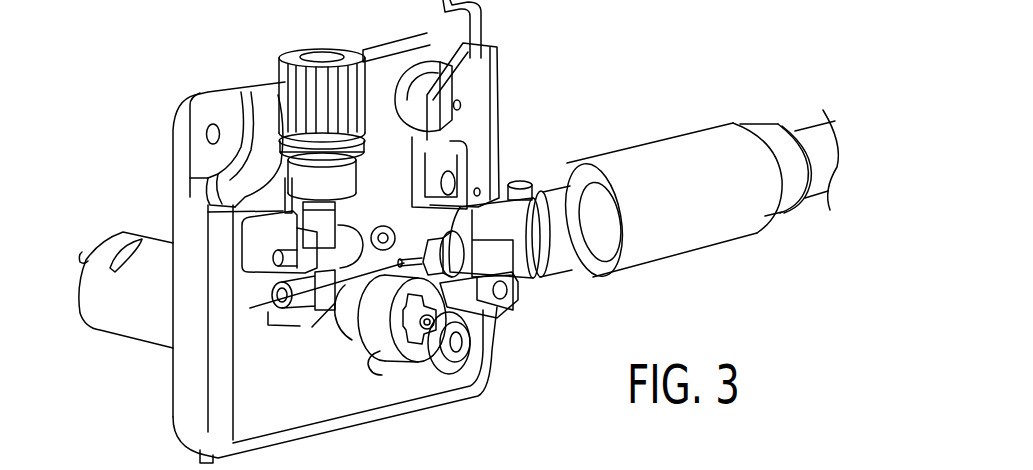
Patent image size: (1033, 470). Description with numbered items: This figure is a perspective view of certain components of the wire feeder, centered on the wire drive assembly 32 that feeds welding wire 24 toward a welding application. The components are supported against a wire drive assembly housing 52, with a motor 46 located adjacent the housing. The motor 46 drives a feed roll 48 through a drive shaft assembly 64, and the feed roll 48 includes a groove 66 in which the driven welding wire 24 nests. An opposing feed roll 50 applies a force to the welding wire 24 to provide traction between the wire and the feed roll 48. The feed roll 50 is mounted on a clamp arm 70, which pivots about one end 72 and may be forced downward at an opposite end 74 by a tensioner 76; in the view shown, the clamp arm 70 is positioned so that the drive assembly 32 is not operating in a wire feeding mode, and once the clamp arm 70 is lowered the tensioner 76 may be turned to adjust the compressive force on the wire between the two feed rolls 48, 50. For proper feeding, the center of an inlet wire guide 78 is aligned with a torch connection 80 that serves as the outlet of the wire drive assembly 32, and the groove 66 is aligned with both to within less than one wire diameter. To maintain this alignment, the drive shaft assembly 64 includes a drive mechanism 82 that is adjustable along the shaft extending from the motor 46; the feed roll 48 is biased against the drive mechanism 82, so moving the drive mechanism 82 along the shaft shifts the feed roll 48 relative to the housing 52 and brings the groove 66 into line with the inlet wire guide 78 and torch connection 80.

The wire drive assembly 32 is at (126, 89).
The welding wire 24 is at (403, 258).
The motor 46 is at (95, 303).
The feed roll 48 is at (412, 362).
The feed roll 50 is at (408, 70).
The wire drive assembly housing 52 is at (188, 380).
The drive shaft assembly 64 is at (394, 323).
The groove 66 is at (342, 327).
The clamp arm 70 is at (482, 93).
The end 72 is at (478, 188).
The opposite end 74 is at (482, 27).
The tensioner 76 is at (292, 50).
The inlet wire guide 78 is at (358, 322).
The torch connection 80 is at (648, 140).
The drive mechanism 82 is at (433, 313).